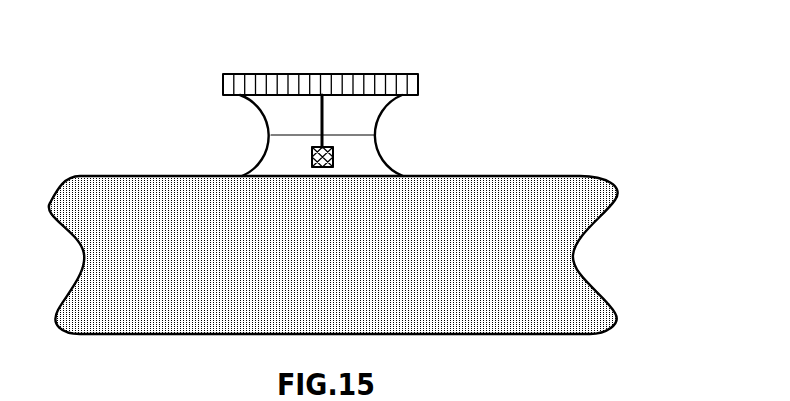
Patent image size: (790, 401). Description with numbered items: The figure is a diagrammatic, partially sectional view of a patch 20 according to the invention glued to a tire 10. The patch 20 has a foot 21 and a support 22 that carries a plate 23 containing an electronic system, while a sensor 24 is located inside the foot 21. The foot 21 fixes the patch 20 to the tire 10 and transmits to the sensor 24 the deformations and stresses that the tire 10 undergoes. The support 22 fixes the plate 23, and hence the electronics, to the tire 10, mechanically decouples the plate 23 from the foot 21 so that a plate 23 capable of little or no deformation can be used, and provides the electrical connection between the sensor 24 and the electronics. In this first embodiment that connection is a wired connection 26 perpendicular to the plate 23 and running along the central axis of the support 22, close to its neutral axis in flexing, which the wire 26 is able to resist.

The tire 10 is at (525, 250).
The patch 20 is at (152, 131).
The foot 21 is at (367, 157).
The support 22 is at (367, 118).
The plate 23 is at (388, 82).
The sensor 24 is at (312, 157).
The wired connection 26 is at (322, 110).